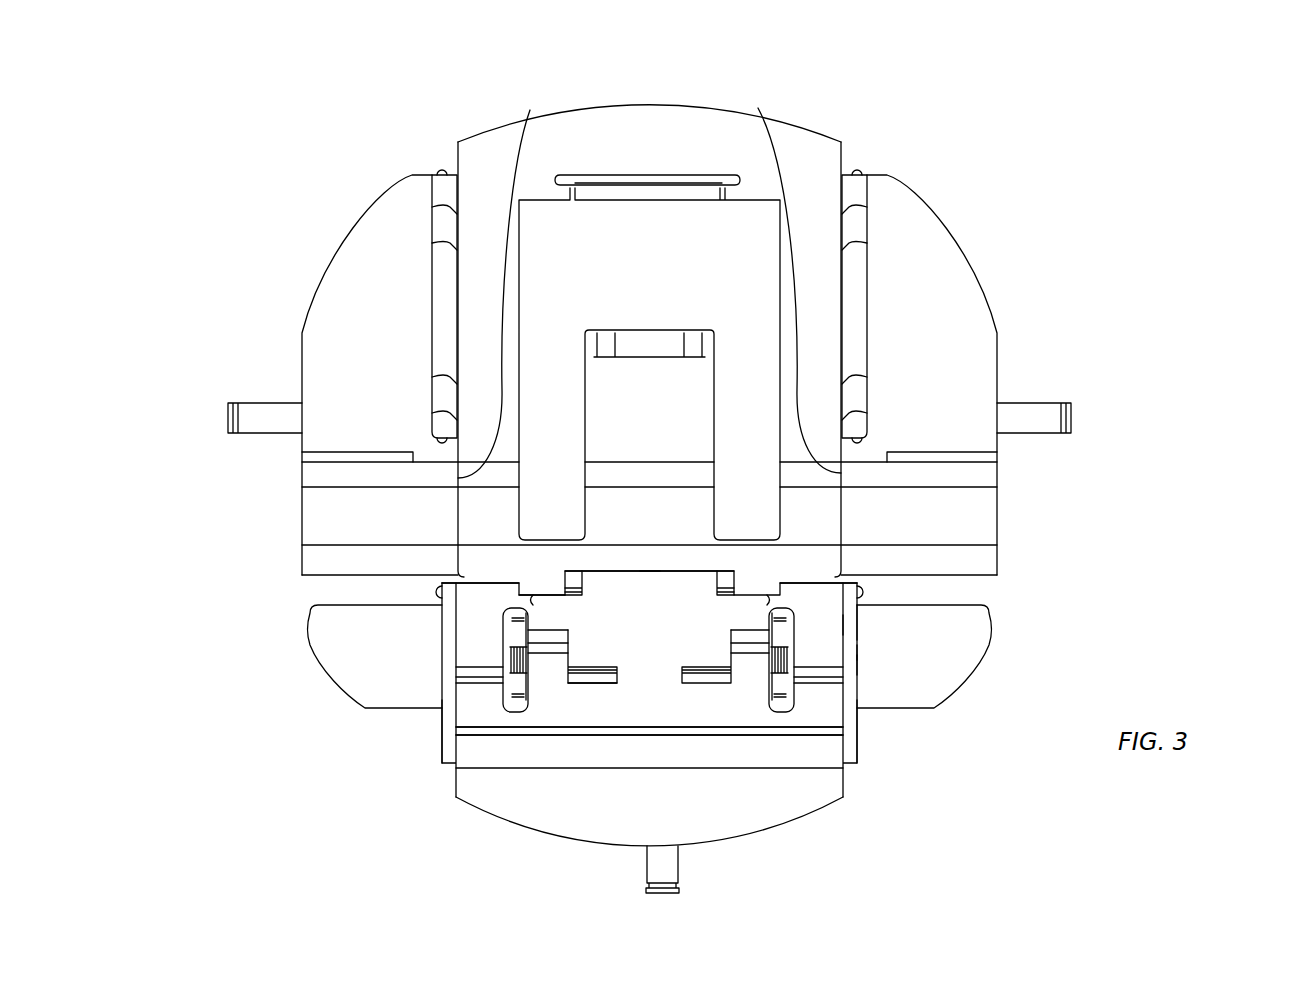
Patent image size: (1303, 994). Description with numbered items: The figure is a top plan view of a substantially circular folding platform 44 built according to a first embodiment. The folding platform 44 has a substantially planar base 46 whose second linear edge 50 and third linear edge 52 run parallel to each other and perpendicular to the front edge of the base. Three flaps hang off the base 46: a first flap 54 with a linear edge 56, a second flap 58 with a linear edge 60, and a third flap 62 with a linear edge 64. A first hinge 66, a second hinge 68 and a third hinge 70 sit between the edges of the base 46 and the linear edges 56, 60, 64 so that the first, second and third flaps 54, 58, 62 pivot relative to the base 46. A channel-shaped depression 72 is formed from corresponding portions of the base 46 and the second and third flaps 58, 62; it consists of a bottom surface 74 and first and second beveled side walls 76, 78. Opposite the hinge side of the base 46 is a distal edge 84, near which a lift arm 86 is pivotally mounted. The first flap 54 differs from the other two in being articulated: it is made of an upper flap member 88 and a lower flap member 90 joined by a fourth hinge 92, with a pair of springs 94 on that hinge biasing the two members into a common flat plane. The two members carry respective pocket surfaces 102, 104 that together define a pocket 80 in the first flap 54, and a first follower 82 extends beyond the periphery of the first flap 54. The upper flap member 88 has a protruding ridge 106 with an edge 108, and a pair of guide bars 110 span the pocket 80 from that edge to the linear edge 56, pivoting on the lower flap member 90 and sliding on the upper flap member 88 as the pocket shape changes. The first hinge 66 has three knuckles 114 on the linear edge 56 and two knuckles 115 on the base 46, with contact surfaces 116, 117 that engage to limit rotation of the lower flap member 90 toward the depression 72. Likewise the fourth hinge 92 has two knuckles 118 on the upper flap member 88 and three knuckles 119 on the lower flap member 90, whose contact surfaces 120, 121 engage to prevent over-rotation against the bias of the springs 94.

The folding platform 44 is at (805, 64).
The base 46 is at (785, 127).
The second linear edge 50 is at (458, 517).
The third linear edge 52 is at (842, 508).
The first flap 54 is at (783, 815).
The linear edge 56 is at (832, 636).
The second flap 58 is at (378, 200).
The linear edge 60 is at (500, 282).
The third flap 62 is at (935, 205).
The linear edge 64 is at (790, 276).
The first hinge 66 is at (901, 592).
The second hinge 68 is at (442, 147).
The third hinge 70 is at (859, 150).
The channel-shaped depression 72 is at (283, 497).
The bottom surface 74 is at (973, 498).
The first beveled side wall 76 is at (983, 473).
The second beveled side wall 78 is at (993, 555).
The pocket 80 is at (437, 608).
The first follower 82 is at (675, 865).
The distal edge 84 is at (632, 103).
The lift arm 86 is at (610, 228).
The upper flap member 88 is at (845, 622).
The lower flap member 90 is at (858, 697).
The fourth hinge 92 is at (858, 663).
The springs 94 is at (788, 617).
The pocket surface 102 is at (617, 717).
The pocket surface 104 is at (645, 660).
The protruding ridge 106 is at (782, 748).
The edge 108 is at (845, 730).
The guide bars 110 is at (437, 740).
The knuckles 114 is at (487, 593).
The knuckles 115 is at (533, 595).
The contact surfaces 116 is at (578, 597).
The contact surfaces 117 is at (575, 572).
The knuckles 118 is at (557, 665).
The knuckles 119 is at (480, 650).
The contact surfaces 120 is at (545, 650).
The contact surfaces 121 is at (463, 672).